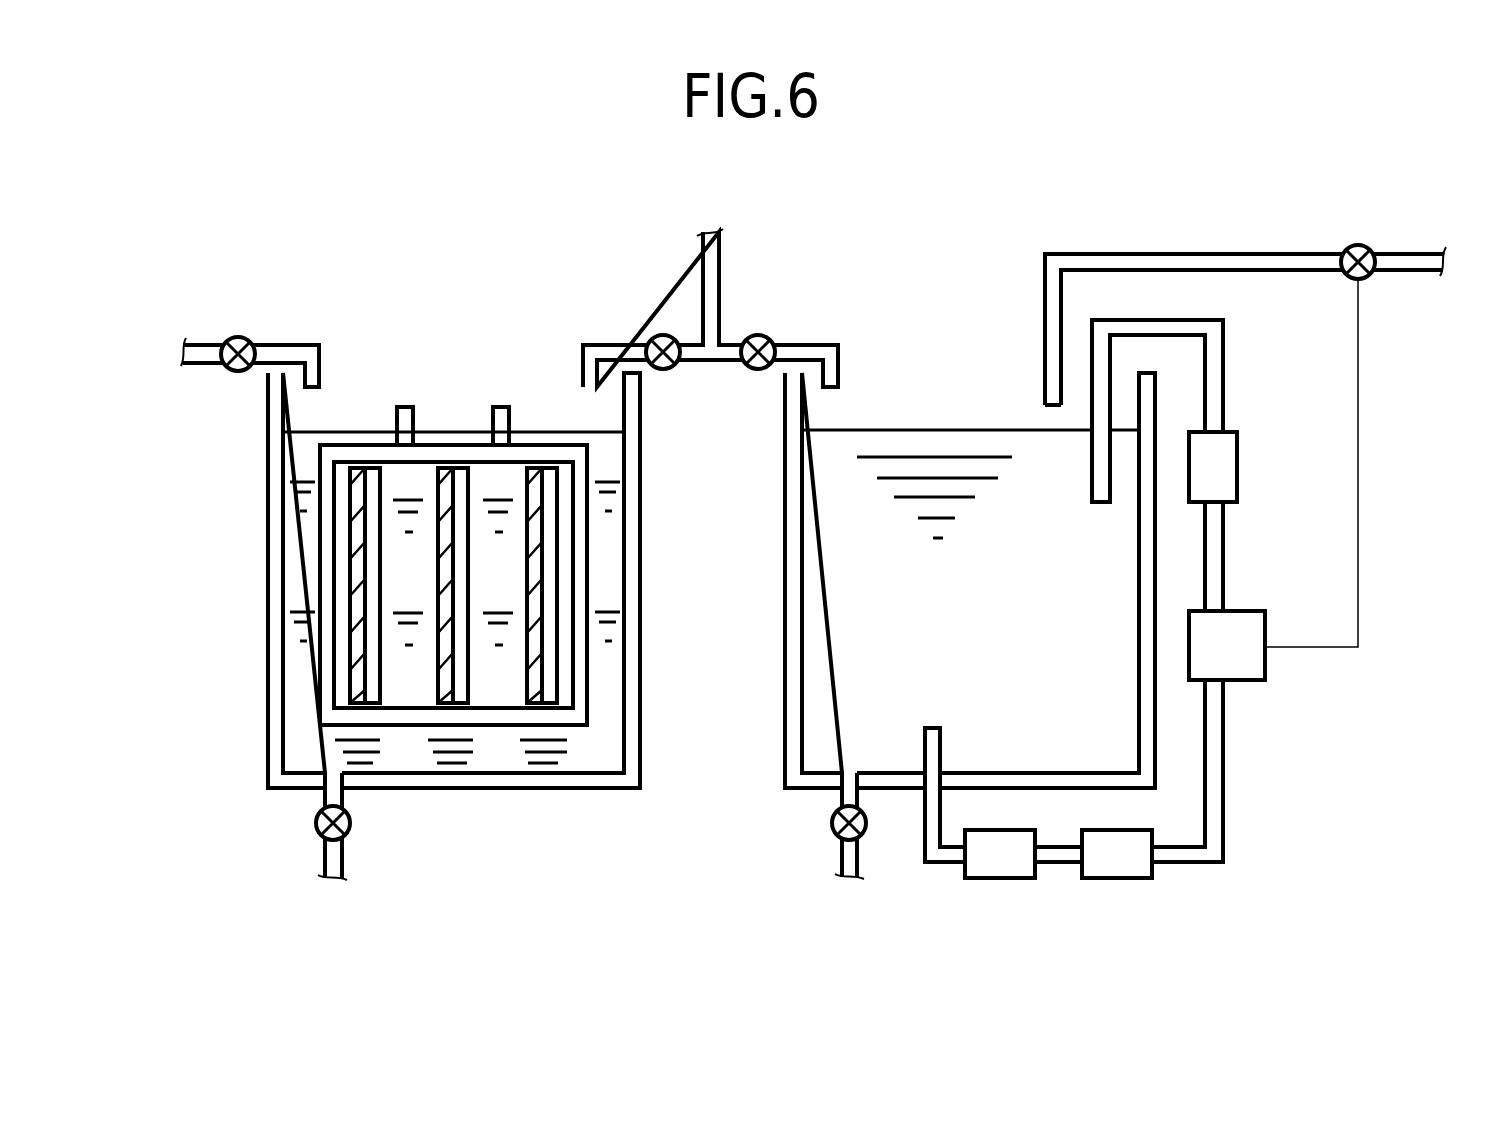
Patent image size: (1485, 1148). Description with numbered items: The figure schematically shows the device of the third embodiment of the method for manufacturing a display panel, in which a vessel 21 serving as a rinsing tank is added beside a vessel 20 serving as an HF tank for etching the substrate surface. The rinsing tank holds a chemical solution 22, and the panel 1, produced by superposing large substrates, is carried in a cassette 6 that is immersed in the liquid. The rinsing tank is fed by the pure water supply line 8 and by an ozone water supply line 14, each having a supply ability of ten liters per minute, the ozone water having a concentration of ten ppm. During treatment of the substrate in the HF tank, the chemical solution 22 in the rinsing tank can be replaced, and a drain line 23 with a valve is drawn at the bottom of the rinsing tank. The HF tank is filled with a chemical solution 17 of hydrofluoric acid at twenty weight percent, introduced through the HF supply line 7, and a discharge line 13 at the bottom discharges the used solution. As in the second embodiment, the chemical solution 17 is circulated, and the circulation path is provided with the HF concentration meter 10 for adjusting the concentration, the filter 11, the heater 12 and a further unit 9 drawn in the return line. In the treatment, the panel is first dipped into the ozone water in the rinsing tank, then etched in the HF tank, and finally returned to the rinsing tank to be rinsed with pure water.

The panel 1 is at (357, 700).
The cassette 6 is at (500, 718).
The HF supply line 7 is at (1213, 252).
The pure water supply line 8 is at (721, 277).
The flow meter 9 is at (1238, 468).
The HF concentration meter 10 is at (1245, 683).
The filter 11 is at (1120, 880).
The heater 12 is at (998, 880).
The discharge line 13 is at (838, 857).
The ozone water supply line 14 is at (283, 343).
The chemical solution 17 is at (818, 673).
The vessel 20 is at (787, 557).
The vessel 21 is at (272, 556).
The chemical solution 22 is at (298, 683).
The drain pipe 23 is at (322, 858).